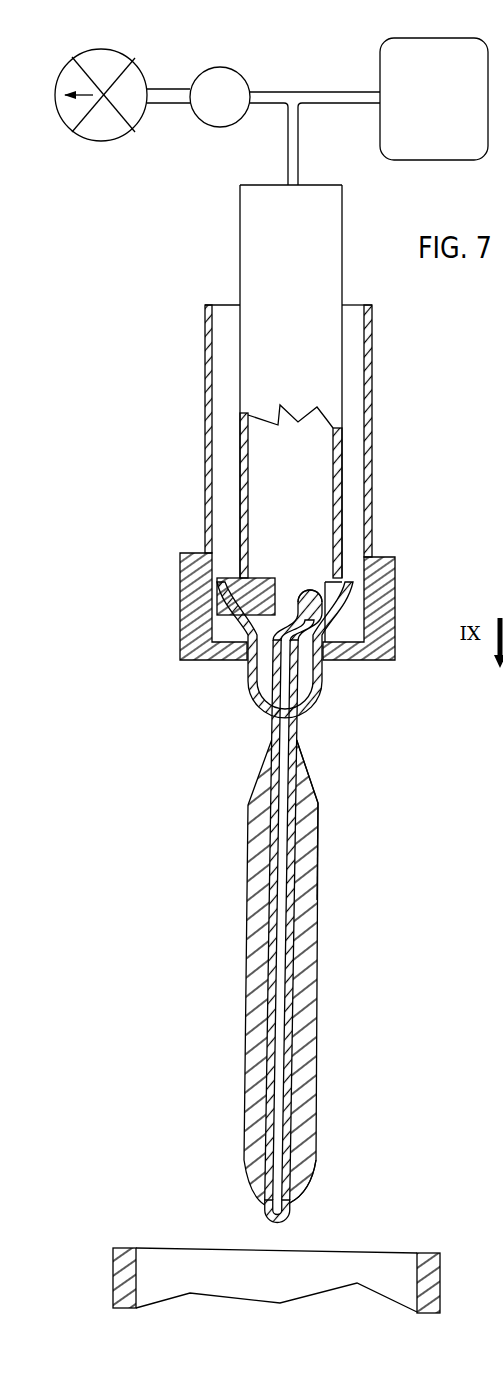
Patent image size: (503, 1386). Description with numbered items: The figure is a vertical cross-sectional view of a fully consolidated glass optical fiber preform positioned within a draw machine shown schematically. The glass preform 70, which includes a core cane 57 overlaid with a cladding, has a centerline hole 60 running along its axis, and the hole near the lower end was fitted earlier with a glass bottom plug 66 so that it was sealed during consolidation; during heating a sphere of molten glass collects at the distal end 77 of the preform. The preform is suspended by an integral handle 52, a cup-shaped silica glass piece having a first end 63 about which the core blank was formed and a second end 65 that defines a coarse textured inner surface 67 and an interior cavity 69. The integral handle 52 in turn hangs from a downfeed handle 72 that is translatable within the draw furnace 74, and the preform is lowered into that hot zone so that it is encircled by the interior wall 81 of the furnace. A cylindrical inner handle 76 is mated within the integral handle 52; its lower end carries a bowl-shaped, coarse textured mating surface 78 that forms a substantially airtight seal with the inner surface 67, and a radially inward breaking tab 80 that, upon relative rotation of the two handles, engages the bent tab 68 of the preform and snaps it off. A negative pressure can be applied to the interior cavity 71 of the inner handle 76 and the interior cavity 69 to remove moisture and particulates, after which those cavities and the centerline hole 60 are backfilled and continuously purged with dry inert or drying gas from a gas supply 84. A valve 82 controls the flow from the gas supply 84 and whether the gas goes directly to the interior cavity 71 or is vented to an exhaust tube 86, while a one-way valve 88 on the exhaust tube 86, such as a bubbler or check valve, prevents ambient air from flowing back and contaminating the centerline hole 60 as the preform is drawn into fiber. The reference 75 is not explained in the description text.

The integral handle 52 is at (226, 702).
The core cane 57 is at (298, 785).
The centerline hole 60 is at (273, 993).
The first end 63 is at (270, 738).
The second end 65 is at (233, 620).
The glass bottom plug 66 is at (277, 1223).
The inner surface 67 is at (264, 562).
The bent tab 68 is at (303, 591).
The interior cavity 69 is at (260, 669).
The glass preform 70 is at (324, 952).
The interior cavity 71 is at (295, 463).
The downfeed handle 72 is at (373, 498).
The draw furnace 74 is at (113, 1275).
The outer tube wall 75 is at (318, 798).
The inner handle 76 is at (348, 543).
The distal end 77 is at (297, 1202).
The mating surface 78 is at (220, 587).
The breaking tab 80 is at (278, 562).
The interior wall 81 is at (137, 1275).
The valve 82 is at (230, 67).
The gas supply 84 is at (432, 38).
The exhaust tube 86 is at (173, 87).
The one-way valve 88 is at (103, 48).